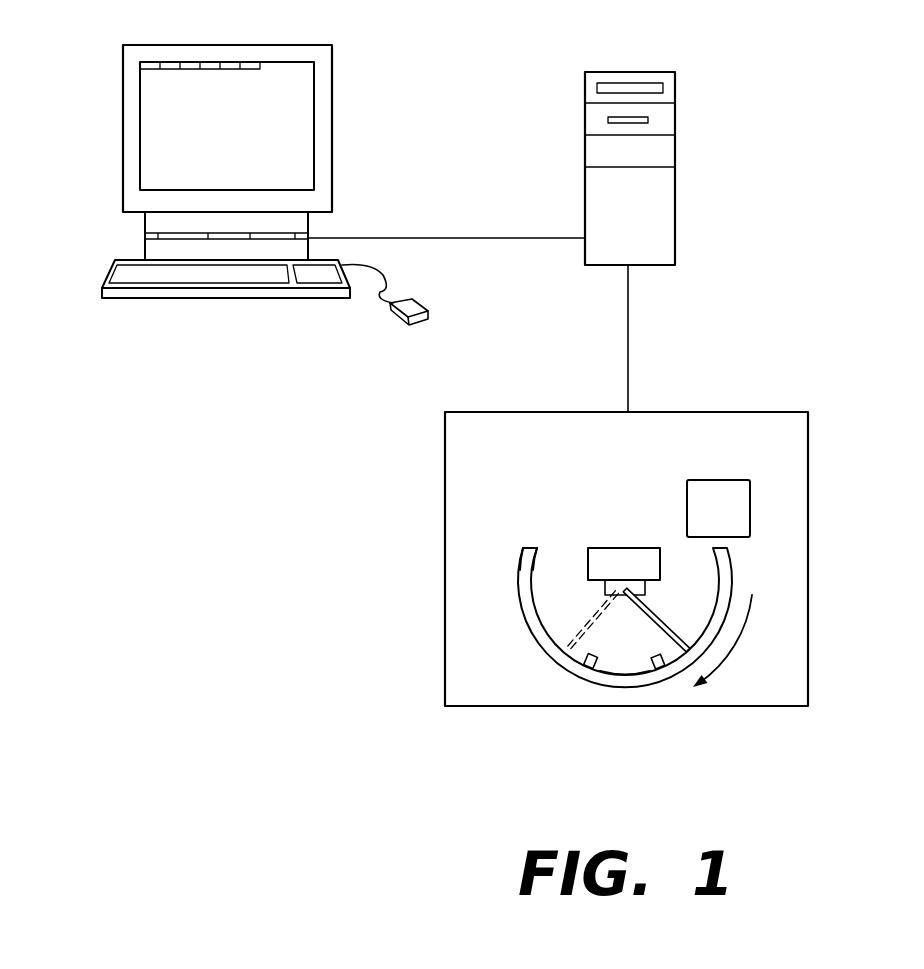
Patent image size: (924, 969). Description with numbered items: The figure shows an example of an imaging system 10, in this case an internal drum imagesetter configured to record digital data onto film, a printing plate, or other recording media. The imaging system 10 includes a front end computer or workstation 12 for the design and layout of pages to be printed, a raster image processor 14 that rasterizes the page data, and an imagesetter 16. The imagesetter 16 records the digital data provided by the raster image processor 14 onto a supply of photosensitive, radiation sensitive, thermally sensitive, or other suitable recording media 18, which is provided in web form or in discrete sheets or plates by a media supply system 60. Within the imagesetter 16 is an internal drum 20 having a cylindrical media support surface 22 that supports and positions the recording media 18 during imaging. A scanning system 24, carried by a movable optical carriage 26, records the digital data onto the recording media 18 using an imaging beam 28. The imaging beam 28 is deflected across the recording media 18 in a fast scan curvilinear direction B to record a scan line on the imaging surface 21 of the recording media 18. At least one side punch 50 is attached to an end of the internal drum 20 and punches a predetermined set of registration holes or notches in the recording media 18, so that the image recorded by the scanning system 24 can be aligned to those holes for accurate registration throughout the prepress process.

The imaging system 10 is at (805, 325).
The front end computer or workstation 12 is at (155, 250).
The raster image processor 14 is at (590, 123).
The imagesetter 16 is at (463, 474).
The recording media 18 is at (637, 675).
The internal drum 20 is at (520, 600).
The imaging surface 21 is at (537, 565).
The cylindrical media support surface 22 is at (525, 565).
The scanning system 24 is at (612, 590).
The movable optical carriage 26 is at (608, 560).
The imaging beam 28 is at (647, 601).
The side punch 50 is at (584, 677).
The media supply system 60 is at (766, 486).
The fast scan curvilinear direction B is at (732, 647).